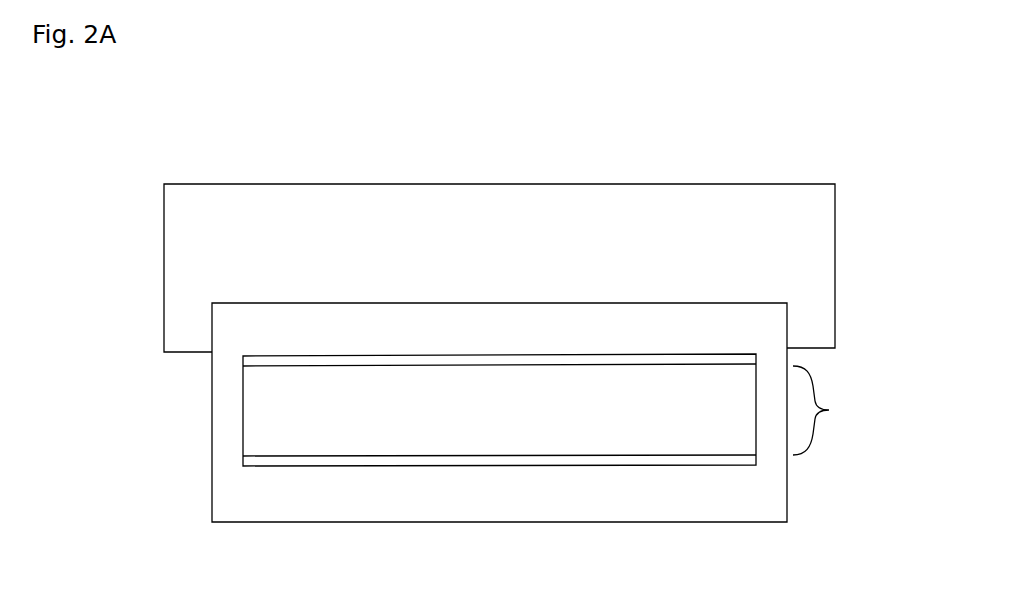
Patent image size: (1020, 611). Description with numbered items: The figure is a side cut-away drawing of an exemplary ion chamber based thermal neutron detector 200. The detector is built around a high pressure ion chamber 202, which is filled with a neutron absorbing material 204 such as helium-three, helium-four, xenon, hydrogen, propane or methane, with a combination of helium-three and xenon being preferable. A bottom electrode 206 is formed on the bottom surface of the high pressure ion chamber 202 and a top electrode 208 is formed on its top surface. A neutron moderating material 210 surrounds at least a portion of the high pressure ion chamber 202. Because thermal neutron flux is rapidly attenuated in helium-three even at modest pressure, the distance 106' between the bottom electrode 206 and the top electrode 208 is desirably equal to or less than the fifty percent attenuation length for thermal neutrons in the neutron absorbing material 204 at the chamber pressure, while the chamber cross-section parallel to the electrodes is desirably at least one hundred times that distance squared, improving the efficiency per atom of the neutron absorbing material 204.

The ion chamber based thermal neutron detector 200 is at (498, 61).
The neutron moderating material 210 is at (202, 184).
The high pressure ion chamber 202 is at (287, 522).
The top electrode 208 is at (643, 355).
The bottom electrode 206 is at (477, 465).
The neutron absorbing material 204 is at (648, 432).
The distance 106' is at (833, 410).